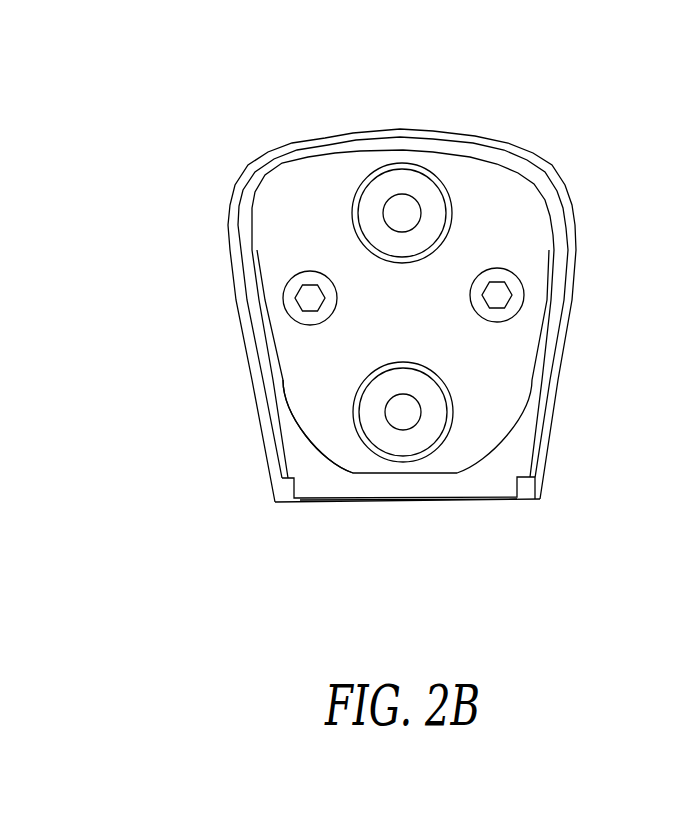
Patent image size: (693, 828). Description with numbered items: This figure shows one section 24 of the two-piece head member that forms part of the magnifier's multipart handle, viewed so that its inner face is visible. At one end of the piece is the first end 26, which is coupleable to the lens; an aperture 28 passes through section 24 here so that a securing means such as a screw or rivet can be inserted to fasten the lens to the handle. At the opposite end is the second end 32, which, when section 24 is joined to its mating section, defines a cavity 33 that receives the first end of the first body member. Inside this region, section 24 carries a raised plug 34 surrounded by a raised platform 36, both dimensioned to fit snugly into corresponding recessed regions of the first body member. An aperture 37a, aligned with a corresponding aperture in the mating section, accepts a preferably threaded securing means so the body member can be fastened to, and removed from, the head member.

The section 24 is at (558, 160).
The first end 26 is at (581, 218).
The aperture 28 is at (405, 208).
The second end 32 is at (440, 503).
The cavity 33 is at (335, 485).
The raised plug 34 is at (372, 405).
The raised platform 36 is at (322, 437).
The aperture 37a is at (412, 418).